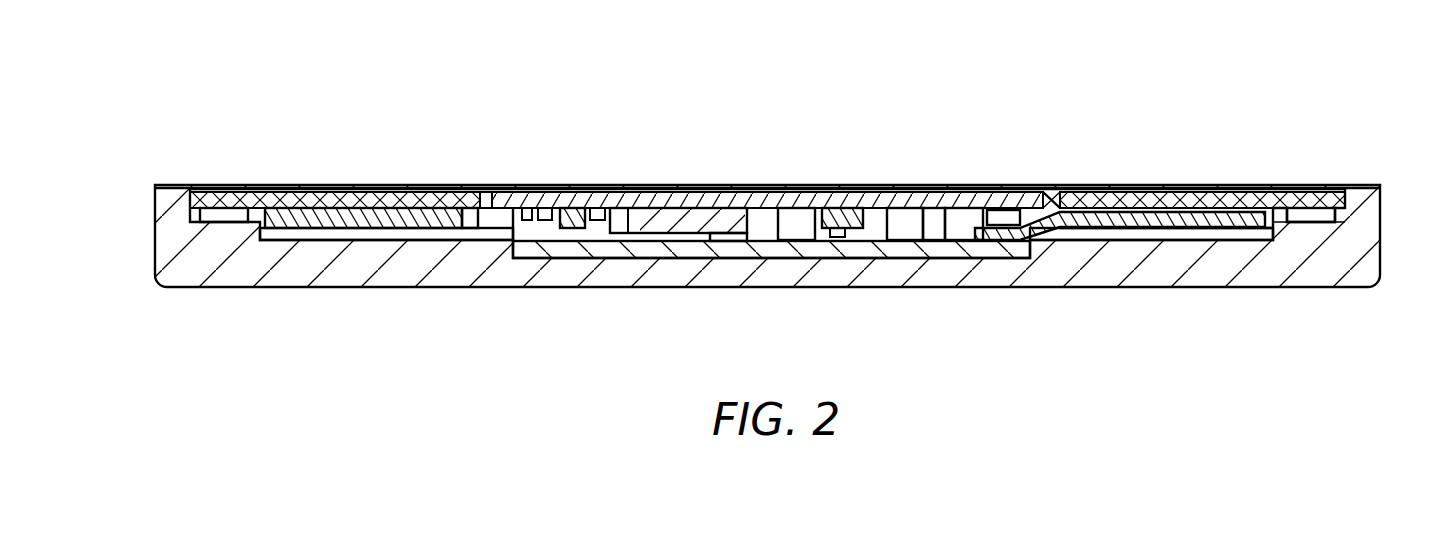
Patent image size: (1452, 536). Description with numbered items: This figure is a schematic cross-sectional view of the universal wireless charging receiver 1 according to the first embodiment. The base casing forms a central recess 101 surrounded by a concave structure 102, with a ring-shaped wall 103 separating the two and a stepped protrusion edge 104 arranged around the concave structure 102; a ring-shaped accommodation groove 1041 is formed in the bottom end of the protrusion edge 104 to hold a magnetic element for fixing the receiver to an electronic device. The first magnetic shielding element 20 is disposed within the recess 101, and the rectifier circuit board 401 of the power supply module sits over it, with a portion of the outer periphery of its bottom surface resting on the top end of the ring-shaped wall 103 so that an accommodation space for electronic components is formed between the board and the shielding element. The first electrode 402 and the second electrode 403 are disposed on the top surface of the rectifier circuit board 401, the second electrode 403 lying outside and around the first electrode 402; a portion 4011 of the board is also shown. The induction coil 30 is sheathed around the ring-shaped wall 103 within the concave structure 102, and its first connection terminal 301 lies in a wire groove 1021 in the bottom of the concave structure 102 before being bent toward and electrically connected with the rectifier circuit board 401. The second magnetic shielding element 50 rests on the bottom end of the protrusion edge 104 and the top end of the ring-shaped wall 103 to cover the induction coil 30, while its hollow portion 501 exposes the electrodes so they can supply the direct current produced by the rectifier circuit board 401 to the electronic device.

The universal wireless charging receiver 1 is at (97, 74).
The recess 101 is at (777, 252).
The concave structure 102 is at (323, 242).
The wire grooves 1021 is at (1215, 242).
The ring-shaped wall 103 is at (497, 223).
The protrusion edge 104 is at (196, 213).
The ring-shaped accommodation groove 1041 is at (233, 223).
The first magnetic shielding element 20 is at (888, 253).
The induction coil 30 is at (402, 230).
The first connection terminal 301 is at (1000, 242).
The rectifier circuit board 401 is at (990, 209).
The connector portion 4011 is at (668, 243).
The first electrode 402 is at (763, 207).
The second electrode 403 is at (625, 205).
The second magnetic shielding element 50 is at (345, 200).
The hollow portion 501 is at (1052, 190).